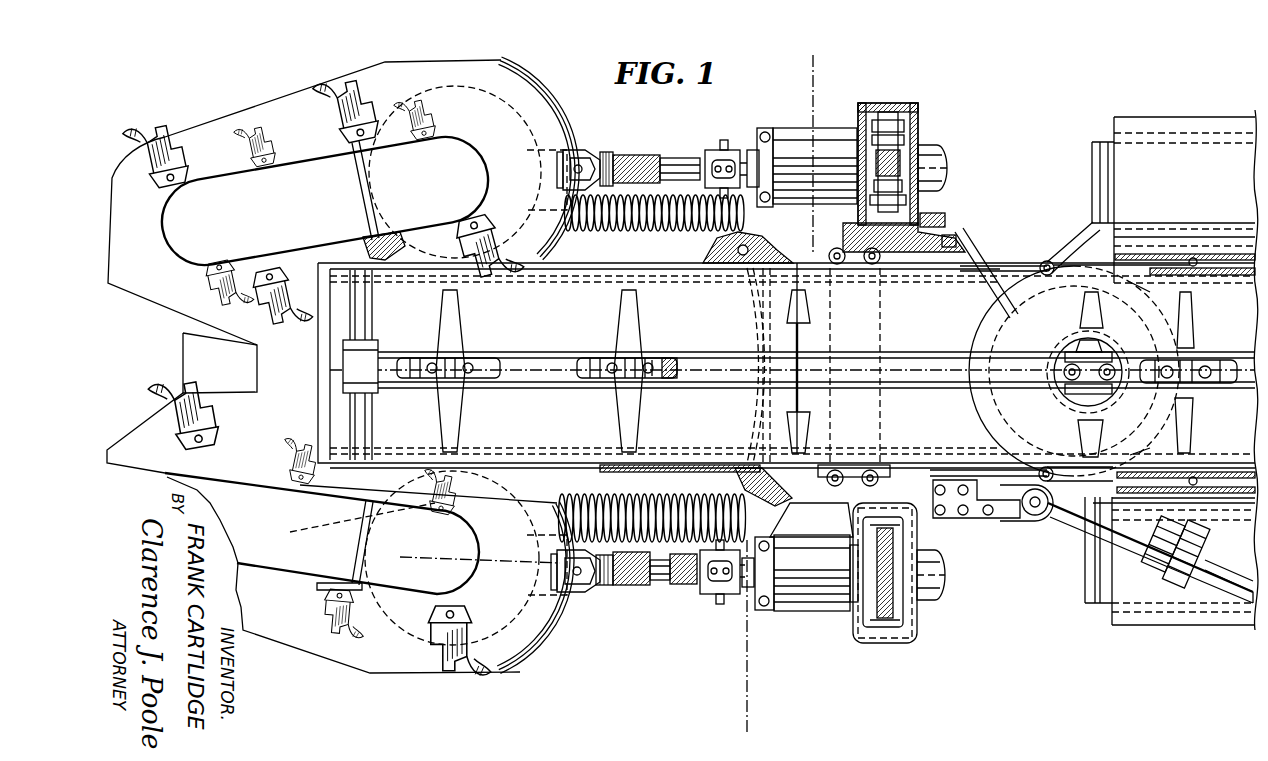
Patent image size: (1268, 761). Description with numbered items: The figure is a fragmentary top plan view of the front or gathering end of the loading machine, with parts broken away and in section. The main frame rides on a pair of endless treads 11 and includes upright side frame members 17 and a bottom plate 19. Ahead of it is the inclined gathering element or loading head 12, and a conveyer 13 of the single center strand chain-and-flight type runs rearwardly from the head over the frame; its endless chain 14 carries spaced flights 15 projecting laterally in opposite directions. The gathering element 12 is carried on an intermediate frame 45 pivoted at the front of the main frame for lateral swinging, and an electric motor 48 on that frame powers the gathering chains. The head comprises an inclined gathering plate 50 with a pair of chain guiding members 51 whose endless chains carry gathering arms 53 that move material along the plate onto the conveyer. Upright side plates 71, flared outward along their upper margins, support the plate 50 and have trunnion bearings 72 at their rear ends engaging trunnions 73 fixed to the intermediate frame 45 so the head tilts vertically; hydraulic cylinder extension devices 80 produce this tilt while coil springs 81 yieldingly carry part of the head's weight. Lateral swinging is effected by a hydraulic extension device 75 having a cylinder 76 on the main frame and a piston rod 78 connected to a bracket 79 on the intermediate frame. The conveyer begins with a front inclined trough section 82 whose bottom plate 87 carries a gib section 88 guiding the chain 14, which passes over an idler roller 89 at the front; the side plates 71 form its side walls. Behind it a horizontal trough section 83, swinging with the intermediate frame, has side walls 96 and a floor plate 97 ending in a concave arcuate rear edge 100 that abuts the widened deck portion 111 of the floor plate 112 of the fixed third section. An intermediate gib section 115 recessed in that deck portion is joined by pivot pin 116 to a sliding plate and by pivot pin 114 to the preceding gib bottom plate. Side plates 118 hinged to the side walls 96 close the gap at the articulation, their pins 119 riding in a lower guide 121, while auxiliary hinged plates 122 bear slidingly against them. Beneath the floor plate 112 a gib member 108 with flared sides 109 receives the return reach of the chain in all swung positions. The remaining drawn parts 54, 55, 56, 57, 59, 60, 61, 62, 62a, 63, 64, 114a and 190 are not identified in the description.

The endless treads 11 is at (1250, 295).
The gathering element 12 is at (214, 111).
The conveyer 13 is at (670, 357).
The endless chain 14 is at (650, 357).
The flights 15 is at (638, 312).
The upright side frame members 17 is at (798, 67).
The bottom plate 19 is at (290, 532).
The intermediate frame 45 is at (958, 605).
The electric motor 48 is at (975, 245).
The inclined gathering plate 50 is at (270, 593).
The chain guiding members 51 is at (300, 157).
The gathering arms 53 is at (150, 140).
The gear housing 54 is at (878, 103).
The gear case 55 is at (918, 105).
The worm gear 56 is at (900, 152).
The gear 57 is at (905, 635).
The motor 59 is at (812, 130).
The coupling 60 is at (783, 595).
The bracket 61 is at (757, 130).
The drive shaft 62 is at (685, 158).
The shaft collar 62a is at (633, 158).
The universal joint 63 is at (722, 142).
The universal joint yoke 64 is at (576, 148).
The upright side plates 71 is at (677, 193).
The trunnion bearings 72 is at (752, 300).
The trunnions 73 is at (815, 268).
The hydraulic extension device 75 is at (1198, 585).
The cylinder 76 is at (1220, 600).
The piston rod 78 is at (1127, 543).
The bracket 79 is at (1007, 523).
The hydraulic cylinder extension devices 80 is at (698, 465).
The coil springs 81 is at (645, 155).
The front inclined trough section 82 is at (570, 463).
The horizontal trough section 83 is at (965, 518).
The bottom plate 87 is at (518, 324).
The gib section 88 is at (540, 390).
The idler roller 89 is at (345, 378).
The side walls 96 is at (990, 265).
The floor plate 97 is at (877, 470).
The concave arcuate rear edge 100 is at (990, 332).
The gib member 108 is at (1102, 302).
The flared sides 109 is at (1085, 428).
The widened deck portion 111 is at (1052, 385).
The floor plate 112 is at (1196, 300).
The pivot pin 114 is at (1068, 382).
The bolt plate 114a is at (1068, 360).
The intermediate gib section 115 is at (1084, 348).
The pivot pin 116 is at (1120, 360).
The side plates 118 is at (1047, 261).
The pins 119 is at (1193, 254).
The guide 121 is at (1235, 268).
The auxiliary hinged plate 122 is at (1148, 283).
The motor cylinder 190 is at (935, 160).